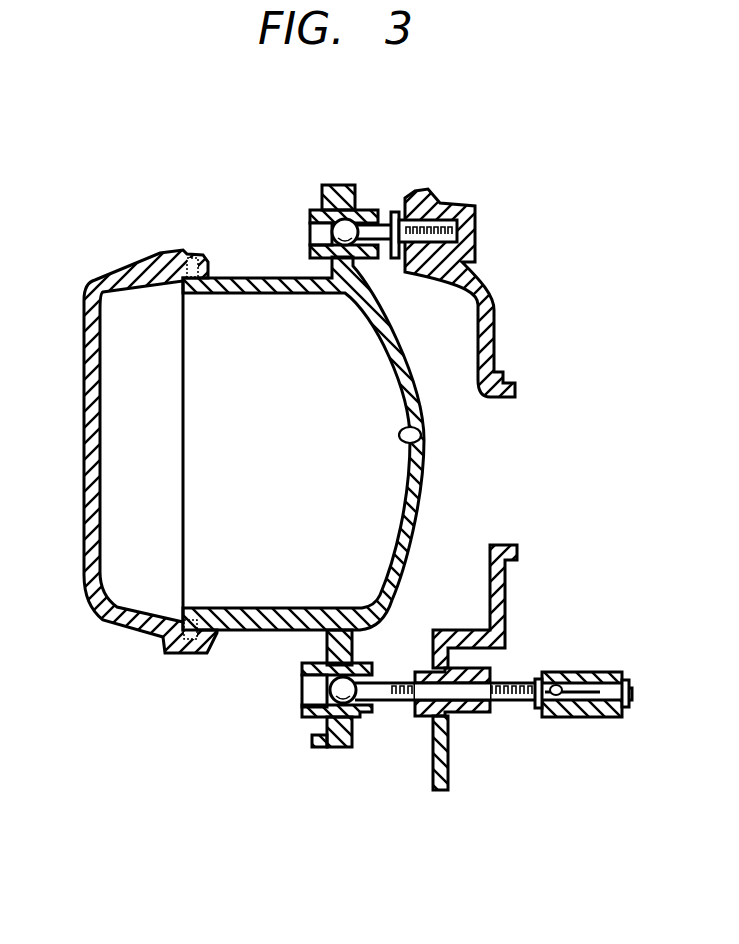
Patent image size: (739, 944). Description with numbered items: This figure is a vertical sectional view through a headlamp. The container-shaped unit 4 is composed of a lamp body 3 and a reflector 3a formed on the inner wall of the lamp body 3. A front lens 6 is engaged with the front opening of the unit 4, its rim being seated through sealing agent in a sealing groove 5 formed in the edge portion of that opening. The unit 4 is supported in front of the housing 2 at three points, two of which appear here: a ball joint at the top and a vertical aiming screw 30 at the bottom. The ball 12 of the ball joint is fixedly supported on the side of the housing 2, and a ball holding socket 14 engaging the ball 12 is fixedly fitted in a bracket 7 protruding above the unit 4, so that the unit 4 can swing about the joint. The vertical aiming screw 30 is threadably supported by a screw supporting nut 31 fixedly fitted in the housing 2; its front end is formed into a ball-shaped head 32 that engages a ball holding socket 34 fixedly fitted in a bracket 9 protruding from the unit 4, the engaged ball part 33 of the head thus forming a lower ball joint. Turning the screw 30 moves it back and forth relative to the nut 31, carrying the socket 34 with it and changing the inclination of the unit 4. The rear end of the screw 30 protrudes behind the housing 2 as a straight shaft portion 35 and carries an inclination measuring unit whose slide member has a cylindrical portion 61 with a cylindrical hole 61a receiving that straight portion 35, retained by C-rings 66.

The housing 2 is at (497, 312).
The lamp body 3 is at (418, 377).
The reflector 3a is at (423, 434).
The container-shaped unit 4 is at (172, 240).
The sealing groove 5 is at (196, 252).
The front lens 6 is at (94, 286).
The bracket 7 is at (347, 186).
The bracket 9 is at (326, 745).
The ball 12 is at (357, 203).
The ball holding socket 14 is at (325, 210).
The vertical aiming screw 30 is at (503, 703).
The screw supporting nut 31 is at (463, 717).
The ball-shaped head 32 is at (337, 745).
The ball 33 is at (320, 694).
The ball holding socket 34 is at (367, 712).
The shaft 35 is at (582, 700).
The cylindrical portion 61 is at (600, 672).
The cylindrical hole 61a is at (556, 685).
The C-ring 66 is at (624, 702).